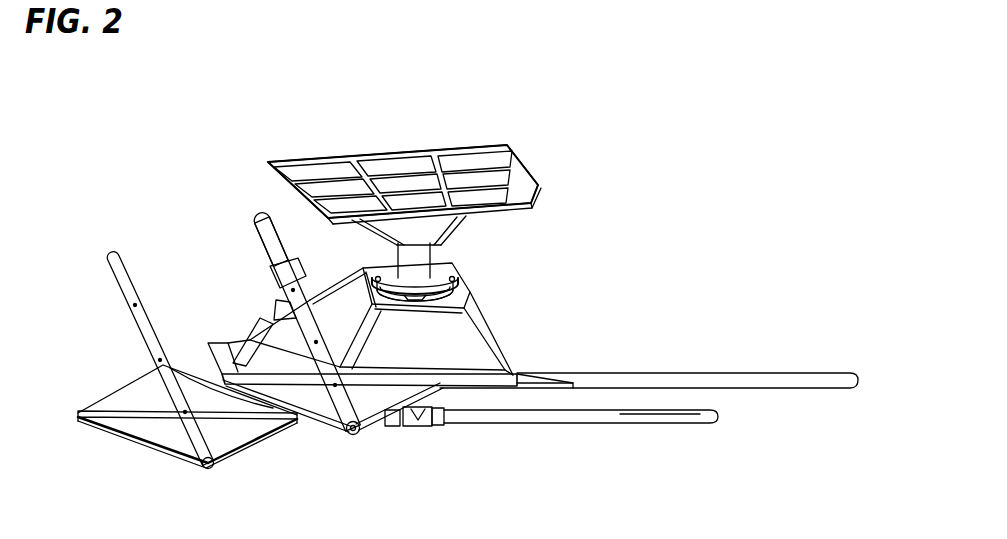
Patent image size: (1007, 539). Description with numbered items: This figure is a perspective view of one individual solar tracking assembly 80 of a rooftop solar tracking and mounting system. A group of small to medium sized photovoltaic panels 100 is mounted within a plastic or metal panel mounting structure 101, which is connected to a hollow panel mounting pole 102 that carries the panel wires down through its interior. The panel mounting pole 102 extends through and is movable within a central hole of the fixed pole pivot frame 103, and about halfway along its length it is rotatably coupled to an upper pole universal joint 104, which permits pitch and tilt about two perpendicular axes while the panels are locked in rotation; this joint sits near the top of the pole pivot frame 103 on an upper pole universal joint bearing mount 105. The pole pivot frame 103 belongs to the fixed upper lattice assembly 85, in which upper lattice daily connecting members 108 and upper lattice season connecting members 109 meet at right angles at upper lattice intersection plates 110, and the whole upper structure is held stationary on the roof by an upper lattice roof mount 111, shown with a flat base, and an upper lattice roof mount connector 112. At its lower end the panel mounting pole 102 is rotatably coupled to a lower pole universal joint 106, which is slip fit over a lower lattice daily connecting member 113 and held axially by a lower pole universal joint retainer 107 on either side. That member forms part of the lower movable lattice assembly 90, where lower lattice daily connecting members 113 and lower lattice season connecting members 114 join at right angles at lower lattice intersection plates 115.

The photovoltaic panel 100 is at (412, 157).
The solar tracking assembly 80 is at (545, 191).
The panel mounting structure 101 is at (468, 228).
The panel mounting pole 102 is at (447, 281).
The upper pole universal joint 104 is at (437, 304).
The upper pole universal joint bearing mount 105 is at (437, 258).
The upper lattice roof mount connector 112 is at (262, 242).
The upper lattice intersection plate 110 is at (327, 407).
The pole pivot frame 103 is at (333, 285).
The upper lattice season connecting member 109 is at (258, 222).
The upper lattice roof mount 111 is at (260, 320).
The fixed upper lattice assembly 85 is at (371, 432).
The lower pole universal joint 106 is at (415, 428).
The lower pole universal joint retainer 107 is at (437, 425).
The upper lattice daily connecting member 108 is at (653, 373).
The lower lattice daily connecting member 113 is at (606, 421).
The lower lattice season connecting member 114 is at (113, 258).
The lower lattice intersection plate 115 is at (142, 393).
The lower movable lattice assembly 90 is at (164, 461).